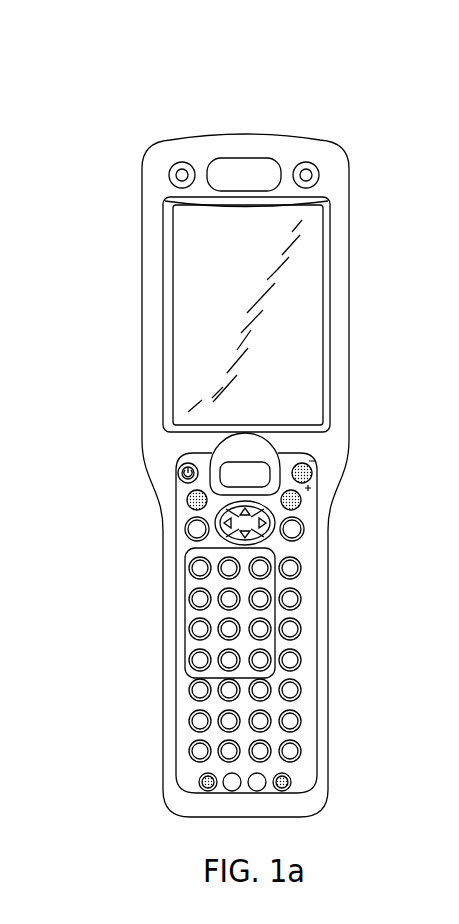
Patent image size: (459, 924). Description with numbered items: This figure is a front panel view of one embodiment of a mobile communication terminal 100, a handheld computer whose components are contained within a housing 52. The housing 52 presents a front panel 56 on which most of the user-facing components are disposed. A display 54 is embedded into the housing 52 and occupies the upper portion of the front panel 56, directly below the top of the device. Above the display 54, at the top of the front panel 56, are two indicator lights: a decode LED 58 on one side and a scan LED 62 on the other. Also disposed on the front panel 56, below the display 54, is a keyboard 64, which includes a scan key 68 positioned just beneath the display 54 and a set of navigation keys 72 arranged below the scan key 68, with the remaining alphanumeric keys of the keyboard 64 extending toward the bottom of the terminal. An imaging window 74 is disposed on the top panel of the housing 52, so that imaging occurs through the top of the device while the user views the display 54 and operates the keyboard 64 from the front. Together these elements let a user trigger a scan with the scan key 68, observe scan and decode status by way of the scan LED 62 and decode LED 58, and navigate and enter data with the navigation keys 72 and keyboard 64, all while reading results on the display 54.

The mobile communication terminal 100 is at (150, 123).
The housing 52 is at (350, 302).
The display 54 is at (193, 330).
The front panel 56 is at (152, 272).
The decode LED 58 is at (171, 166).
The scan LED 62 is at (316, 166).
The keyboard 64 is at (212, 617).
The scan key 68 is at (218, 465).
The navigation keys 72 is at (190, 514).
The imaging window 74 is at (243, 137).